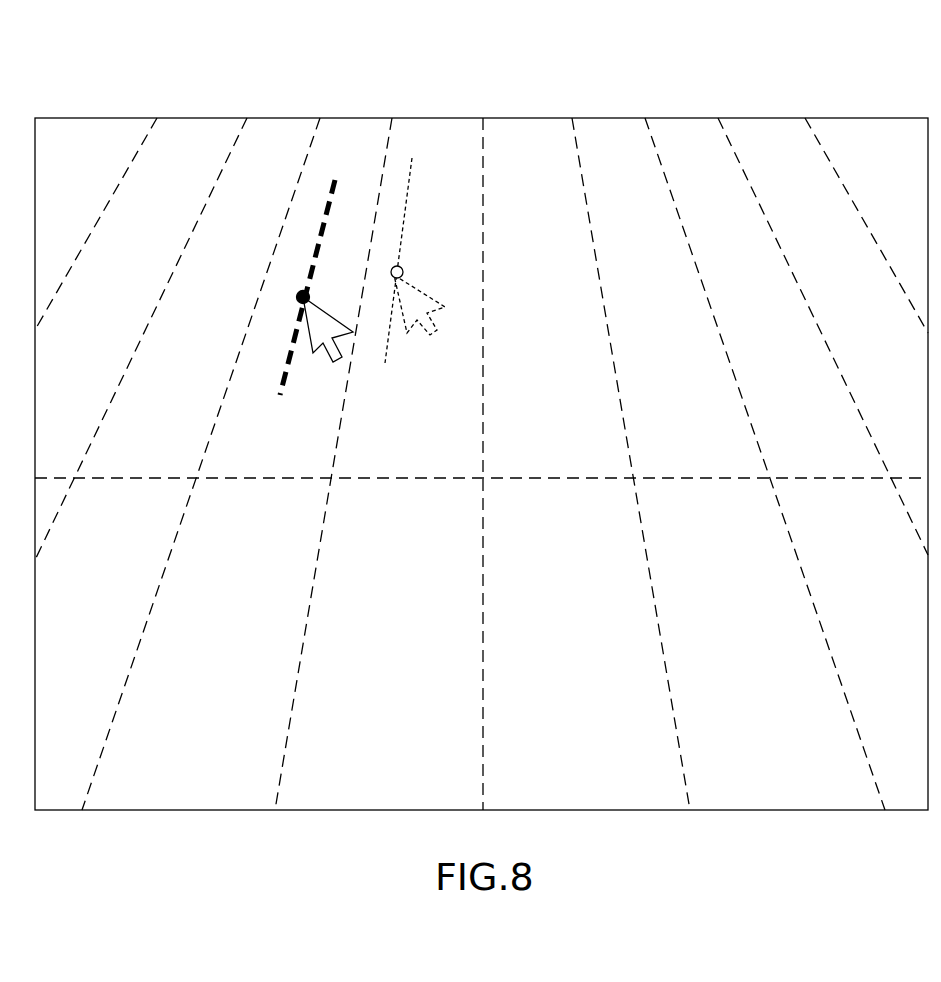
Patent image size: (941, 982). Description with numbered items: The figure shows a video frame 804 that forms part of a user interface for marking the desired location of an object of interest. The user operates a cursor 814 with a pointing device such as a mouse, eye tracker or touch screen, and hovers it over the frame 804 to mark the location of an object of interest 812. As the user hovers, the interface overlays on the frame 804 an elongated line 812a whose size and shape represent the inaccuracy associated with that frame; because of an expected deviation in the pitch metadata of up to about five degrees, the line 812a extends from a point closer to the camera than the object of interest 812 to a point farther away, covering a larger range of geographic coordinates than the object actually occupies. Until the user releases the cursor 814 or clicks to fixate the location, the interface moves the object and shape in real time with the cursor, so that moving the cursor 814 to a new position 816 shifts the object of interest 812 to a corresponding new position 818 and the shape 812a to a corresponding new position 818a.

The video frame 804 is at (827, 101).
The object of interest 812 is at (300, 294).
The elongated line 812a is at (330, 208).
The cursor 814 is at (350, 345).
The new position of cursor 816 is at (445, 320).
The new position of object of interest 818 is at (407, 283).
The new position of shape 818a is at (405, 215).